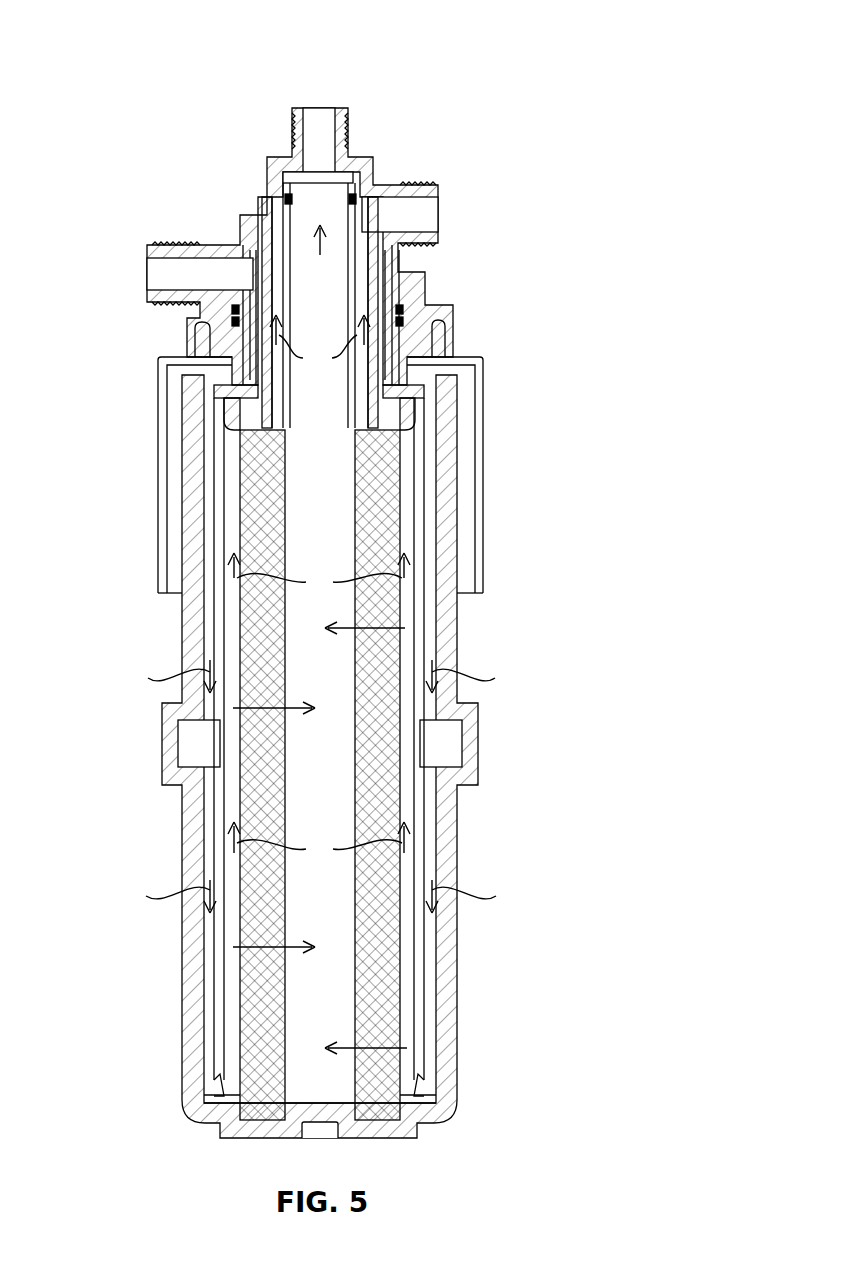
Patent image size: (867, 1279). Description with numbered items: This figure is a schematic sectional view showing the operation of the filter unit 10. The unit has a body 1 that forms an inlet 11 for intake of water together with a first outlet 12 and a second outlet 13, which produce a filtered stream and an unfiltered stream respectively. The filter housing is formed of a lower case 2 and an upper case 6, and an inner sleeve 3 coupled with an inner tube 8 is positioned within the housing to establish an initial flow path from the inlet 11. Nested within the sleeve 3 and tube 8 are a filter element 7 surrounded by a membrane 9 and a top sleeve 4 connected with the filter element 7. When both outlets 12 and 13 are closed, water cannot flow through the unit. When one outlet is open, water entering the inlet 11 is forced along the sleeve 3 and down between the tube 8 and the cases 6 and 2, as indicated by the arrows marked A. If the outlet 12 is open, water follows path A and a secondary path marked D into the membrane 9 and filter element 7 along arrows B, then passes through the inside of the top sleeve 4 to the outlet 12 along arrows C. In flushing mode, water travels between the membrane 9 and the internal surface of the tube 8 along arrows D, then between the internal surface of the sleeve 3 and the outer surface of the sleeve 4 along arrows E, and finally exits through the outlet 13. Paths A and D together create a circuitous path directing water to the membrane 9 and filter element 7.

The filter unit 10 is at (160, 148).
The body 1 is at (350, 147).
The first outlet 12 is at (322, 107).
The second outlet 13 is at (438, 212).
The inlet 11 is at (147, 273).
The top sleeve 4 is at (347, 185).
The inner sleeve 3 is at (380, 313).
The upper case 6 is at (455, 418).
The lower case 2 is at (455, 857).
The inner tube 8 is at (422, 525).
The filter element 7 is at (380, 945).
The membrane 9 is at (398, 1027).